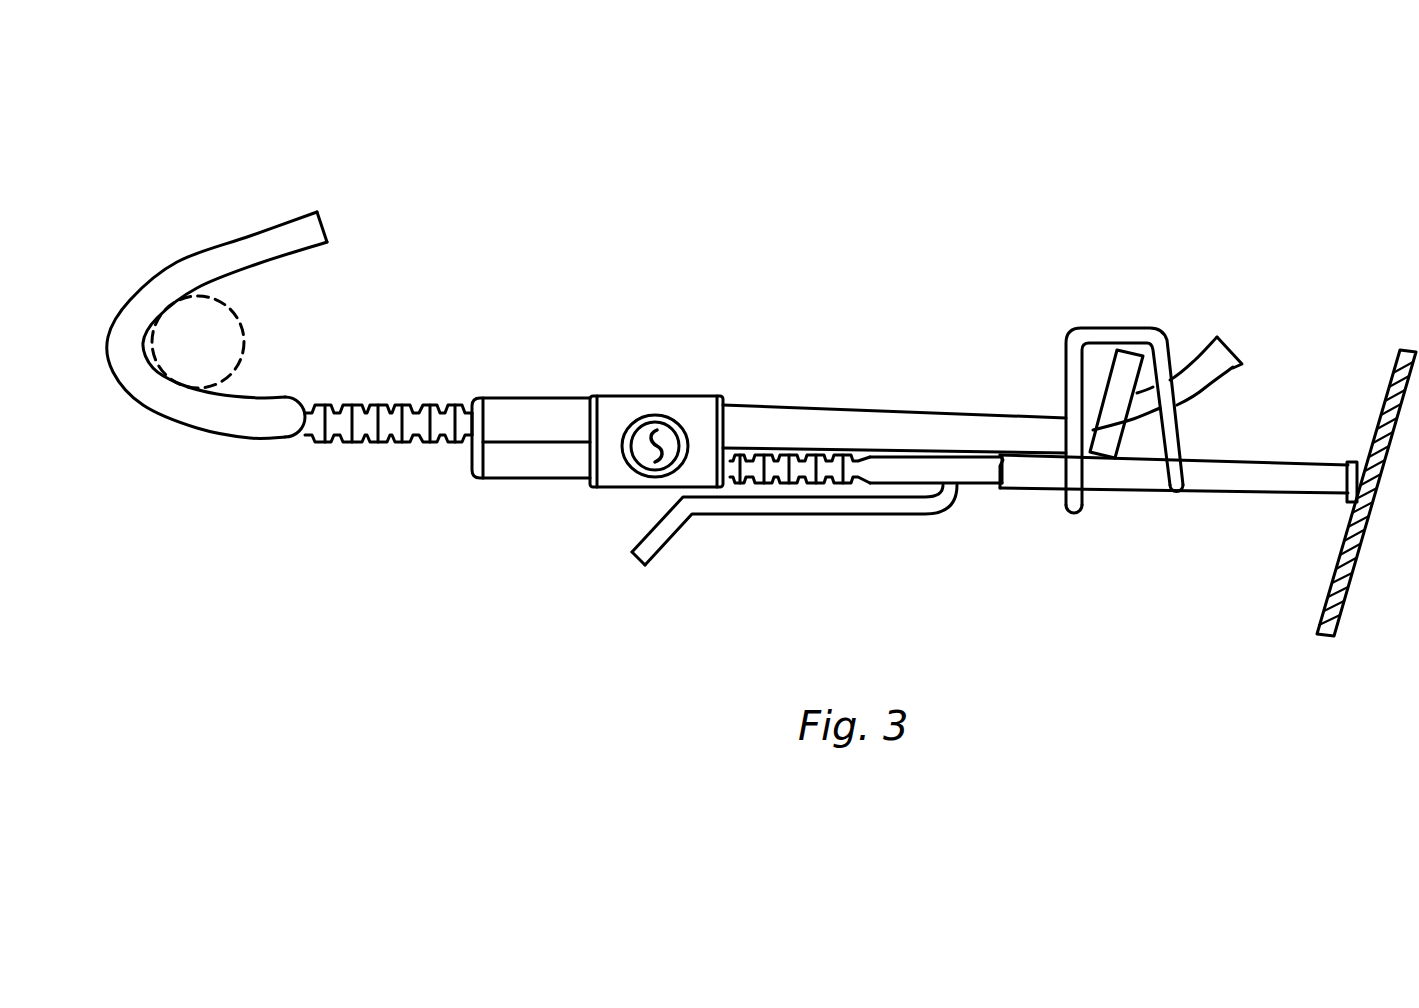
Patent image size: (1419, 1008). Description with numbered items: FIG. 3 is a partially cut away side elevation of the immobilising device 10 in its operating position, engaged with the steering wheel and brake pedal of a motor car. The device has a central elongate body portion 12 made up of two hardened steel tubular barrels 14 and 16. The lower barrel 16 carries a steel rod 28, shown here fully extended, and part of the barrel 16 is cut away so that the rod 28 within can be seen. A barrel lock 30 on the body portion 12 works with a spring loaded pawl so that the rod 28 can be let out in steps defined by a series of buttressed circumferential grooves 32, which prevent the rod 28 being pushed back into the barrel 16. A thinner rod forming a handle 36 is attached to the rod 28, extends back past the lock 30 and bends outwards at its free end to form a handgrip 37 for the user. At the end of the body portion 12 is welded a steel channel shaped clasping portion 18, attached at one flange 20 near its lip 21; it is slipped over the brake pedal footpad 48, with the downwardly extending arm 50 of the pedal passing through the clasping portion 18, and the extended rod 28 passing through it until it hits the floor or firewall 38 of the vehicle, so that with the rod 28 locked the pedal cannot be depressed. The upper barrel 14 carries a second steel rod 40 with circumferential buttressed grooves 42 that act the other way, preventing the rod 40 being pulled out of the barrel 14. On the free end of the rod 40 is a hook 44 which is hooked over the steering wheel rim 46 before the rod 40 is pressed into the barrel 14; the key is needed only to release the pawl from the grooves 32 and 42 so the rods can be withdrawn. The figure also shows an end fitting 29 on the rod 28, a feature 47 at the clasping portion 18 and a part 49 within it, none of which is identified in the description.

The immobilising device 10 is at (385, 603).
The central elongate body portion 12 is at (777, 405).
The upper tubular barrel 14 is at (890, 410).
The tubular barrel 16 is at (510, 480).
The clasping portion 18 is at (1127, 329).
The flange 20 is at (1060, 370).
The lip 21 is at (1074, 508).
The steel rod 28 is at (970, 488).
The rod end cap 29 is at (1347, 498).
The barrel lock 30 is at (660, 417).
The buttressed circumferential grooves 32 is at (803, 483).
The handle 36 is at (772, 514).
The handgrip 37 is at (660, 548).
The floor or firewall 38 is at (1380, 433).
The steel rod 40 is at (428, 404).
The circumferential buttressed grooves 42 is at (368, 404).
The hook 44 is at (238, 235).
The steering wheel rim 46 is at (243, 356).
The slot 47 is at (1108, 385).
The brake pedal footpad 48 is at (1120, 356).
The pawl 49 is at (1120, 446).
The downwardly extending arm 50 is at (1247, 363).